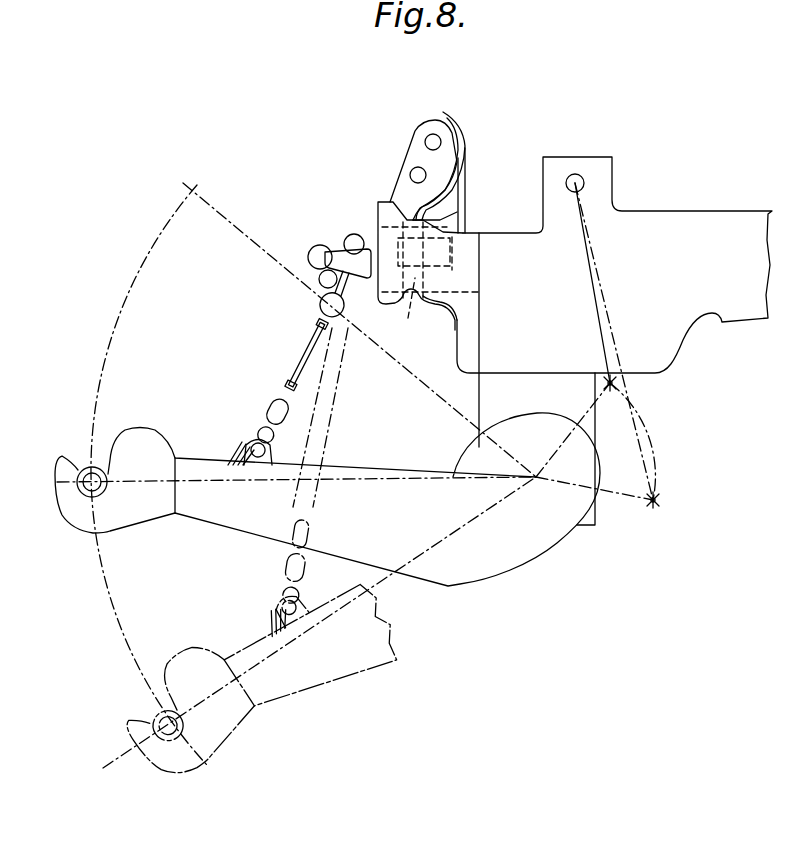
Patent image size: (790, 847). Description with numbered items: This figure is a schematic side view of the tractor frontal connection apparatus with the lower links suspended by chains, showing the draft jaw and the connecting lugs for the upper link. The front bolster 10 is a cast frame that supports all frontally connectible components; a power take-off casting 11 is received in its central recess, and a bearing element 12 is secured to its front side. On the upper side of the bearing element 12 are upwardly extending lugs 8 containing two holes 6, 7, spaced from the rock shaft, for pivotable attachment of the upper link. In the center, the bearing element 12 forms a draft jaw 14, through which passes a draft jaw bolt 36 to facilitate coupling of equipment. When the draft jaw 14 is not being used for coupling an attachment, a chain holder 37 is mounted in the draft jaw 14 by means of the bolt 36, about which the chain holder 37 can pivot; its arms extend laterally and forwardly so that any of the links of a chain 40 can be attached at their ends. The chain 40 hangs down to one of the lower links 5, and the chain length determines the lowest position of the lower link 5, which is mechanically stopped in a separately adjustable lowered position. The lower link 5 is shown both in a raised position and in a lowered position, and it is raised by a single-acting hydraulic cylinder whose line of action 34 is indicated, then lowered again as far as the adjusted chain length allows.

The lower link 5 is at (426, 528).
The hole 6 is at (432, 134).
The hole 7 is at (426, 175).
The lug 8 is at (410, 155).
The front bolster 10 is at (554, 310).
The power take-off casting 11 is at (463, 345).
The bearing element 12 is at (389, 200).
The draft jaw 14 is at (377, 235).
The line of action 34 is at (604, 304).
The draft jaw bolt 36 is at (398, 309).
The chain holder 37 is at (357, 256).
The chain 40 is at (268, 400).